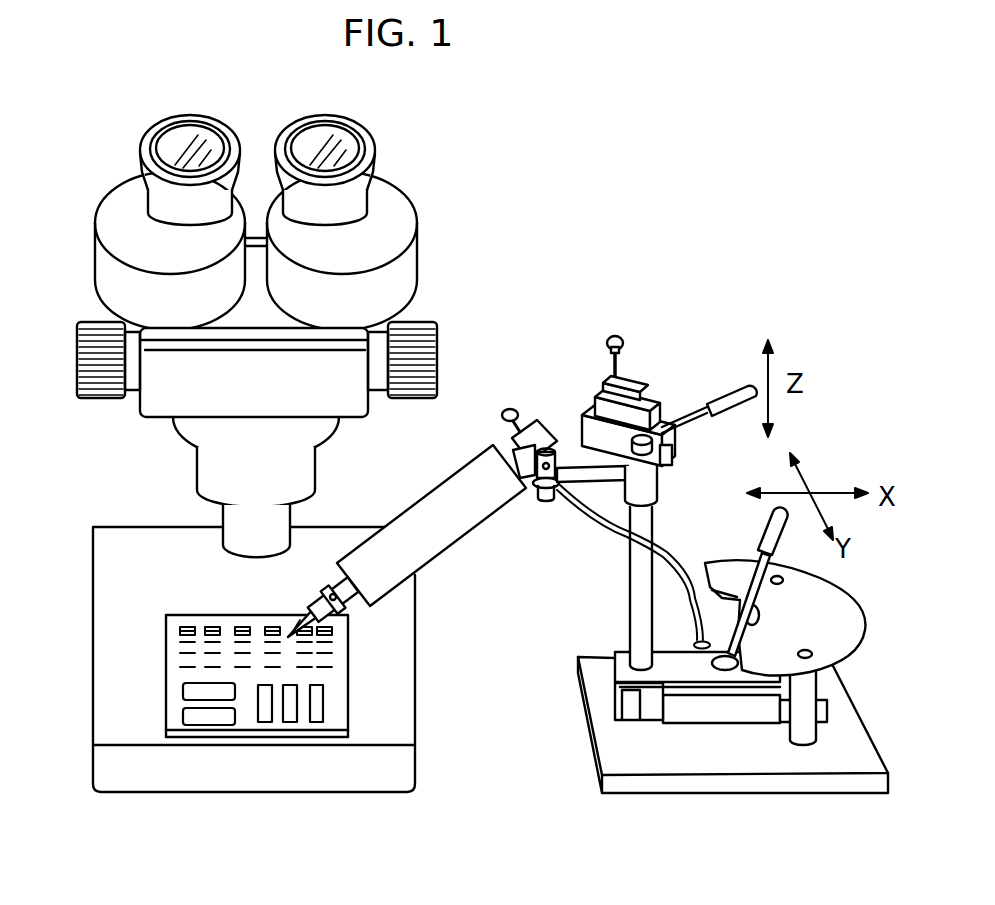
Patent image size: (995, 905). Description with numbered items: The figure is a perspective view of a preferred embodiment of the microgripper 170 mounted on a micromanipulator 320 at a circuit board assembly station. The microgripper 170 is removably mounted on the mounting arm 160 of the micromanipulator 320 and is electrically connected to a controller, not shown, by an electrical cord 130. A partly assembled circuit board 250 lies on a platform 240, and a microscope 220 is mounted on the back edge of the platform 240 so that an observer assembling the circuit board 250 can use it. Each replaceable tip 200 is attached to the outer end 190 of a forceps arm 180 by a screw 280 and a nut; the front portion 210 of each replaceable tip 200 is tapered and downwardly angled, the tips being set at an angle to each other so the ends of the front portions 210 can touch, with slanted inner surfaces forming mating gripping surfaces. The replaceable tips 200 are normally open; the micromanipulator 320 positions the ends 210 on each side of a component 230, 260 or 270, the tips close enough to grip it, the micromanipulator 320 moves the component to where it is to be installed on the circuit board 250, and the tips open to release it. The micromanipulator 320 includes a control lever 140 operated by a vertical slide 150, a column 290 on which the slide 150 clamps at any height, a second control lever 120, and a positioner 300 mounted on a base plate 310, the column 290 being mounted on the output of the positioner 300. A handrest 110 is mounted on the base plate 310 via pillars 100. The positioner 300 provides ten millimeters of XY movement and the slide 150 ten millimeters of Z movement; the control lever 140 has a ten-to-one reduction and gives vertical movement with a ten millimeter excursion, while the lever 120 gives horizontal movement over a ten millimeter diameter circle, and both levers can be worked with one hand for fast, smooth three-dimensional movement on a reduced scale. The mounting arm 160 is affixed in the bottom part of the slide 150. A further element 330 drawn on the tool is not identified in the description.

The pillars 100 is at (812, 682).
The handrest 110 is at (842, 638).
The control lever 120 is at (845, 580).
The electrical cord 130 is at (675, 557).
The control lever 140 is at (728, 400).
The slide 150 is at (655, 398).
The mounting arm 160 is at (572, 466).
The microgripper 170 is at (361, 561).
The forceps arm 180 is at (327, 556).
The outer end 190 is at (322, 596).
The replaceable tip 200 is at (290, 612).
The front portion 210 is at (277, 619).
The microscope 220 is at (425, 243).
The component 230 is at (180, 629).
The platform 240 is at (115, 538).
The circuit board 250 is at (175, 673).
The component 260 is at (207, 723).
The component 270 is at (317, 723).
The screw 280 is at (345, 606).
The column 290 is at (632, 580).
The positioner 300 is at (633, 692).
The base plate 310 is at (608, 755).
The micromanipulator 320 is at (683, 803).
The tool body 330 is at (452, 530).